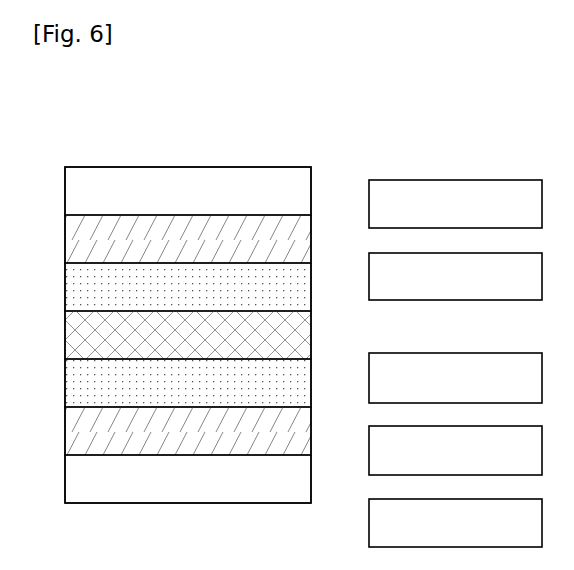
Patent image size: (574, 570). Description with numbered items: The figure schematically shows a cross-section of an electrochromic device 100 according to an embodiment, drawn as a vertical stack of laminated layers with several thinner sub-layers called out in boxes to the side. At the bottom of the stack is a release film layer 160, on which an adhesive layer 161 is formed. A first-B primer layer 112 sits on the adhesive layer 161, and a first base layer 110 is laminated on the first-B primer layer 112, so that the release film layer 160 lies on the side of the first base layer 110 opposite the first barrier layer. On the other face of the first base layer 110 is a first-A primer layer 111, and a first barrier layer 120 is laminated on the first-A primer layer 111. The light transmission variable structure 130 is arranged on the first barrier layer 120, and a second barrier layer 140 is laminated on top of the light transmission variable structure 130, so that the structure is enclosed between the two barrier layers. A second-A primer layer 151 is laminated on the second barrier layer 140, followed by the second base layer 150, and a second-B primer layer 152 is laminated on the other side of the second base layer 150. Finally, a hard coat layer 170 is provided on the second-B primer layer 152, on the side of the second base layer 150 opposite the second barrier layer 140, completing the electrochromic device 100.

The electrochromic device 100 is at (322, 105).
The first base layer 110 is at (188, 431).
The first-A primer layer 111 is at (311, 407).
The first-B primer layer 112 is at (311, 455).
The first barrier layer 120 is at (188, 383).
The light transmission variable structure 130 is at (188, 335).
The second barrier layer 140 is at (188, 287).
The second base layer 150 is at (188, 239).
The second-A primer layer 151 is at (311, 263).
The second-B primer layer 152 is at (311, 215).
The release film layer 160 is at (188, 479).
The adhesive layer 161 is at (311, 455).
The hard coat layer 170 is at (188, 191).